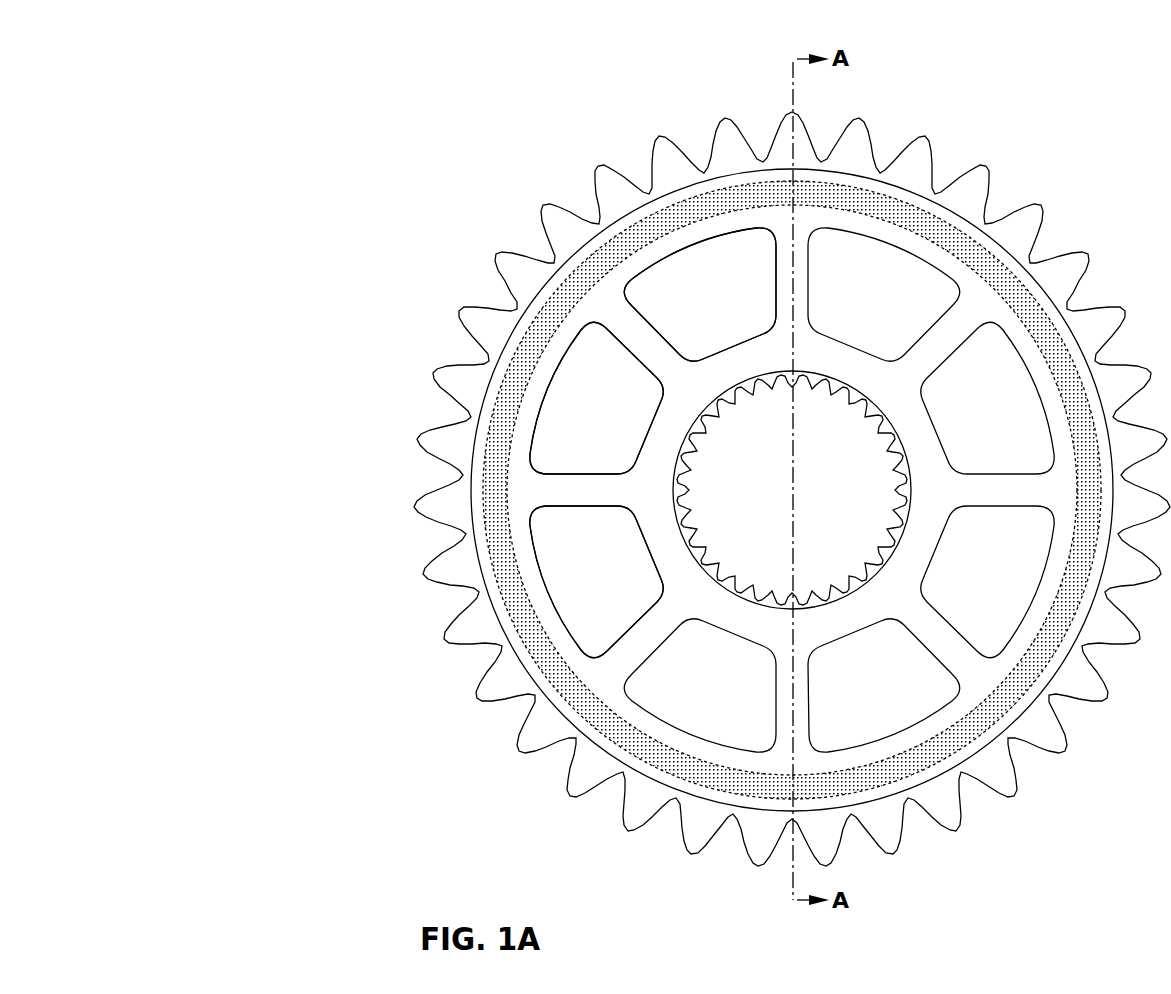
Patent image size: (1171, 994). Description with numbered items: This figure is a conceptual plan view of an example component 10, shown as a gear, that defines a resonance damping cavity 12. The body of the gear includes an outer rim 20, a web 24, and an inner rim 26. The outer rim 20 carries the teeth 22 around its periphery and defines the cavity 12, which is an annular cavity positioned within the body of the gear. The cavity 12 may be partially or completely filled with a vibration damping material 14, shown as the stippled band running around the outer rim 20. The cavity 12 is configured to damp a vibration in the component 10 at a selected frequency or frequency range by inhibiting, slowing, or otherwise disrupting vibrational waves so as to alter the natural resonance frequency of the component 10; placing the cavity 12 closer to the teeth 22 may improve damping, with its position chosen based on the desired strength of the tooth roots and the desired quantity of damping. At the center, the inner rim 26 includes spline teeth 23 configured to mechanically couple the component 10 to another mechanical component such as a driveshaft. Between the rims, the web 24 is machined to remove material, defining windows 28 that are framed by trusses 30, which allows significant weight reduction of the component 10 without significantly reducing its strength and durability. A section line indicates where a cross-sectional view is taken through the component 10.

The component 10 is at (325, 66).
The resonance damping cavity 12 is at (988, 248).
The vibration damping material 14 is at (1083, 371).
The outer rim 20 is at (537, 297).
The teeth 22 is at (442, 367).
The spline teeth 23 is at (882, 428).
The web 24 is at (633, 345).
The inner rim 26 is at (752, 348).
The windows 28 is at (608, 441).
The trusses 30 is at (560, 512).